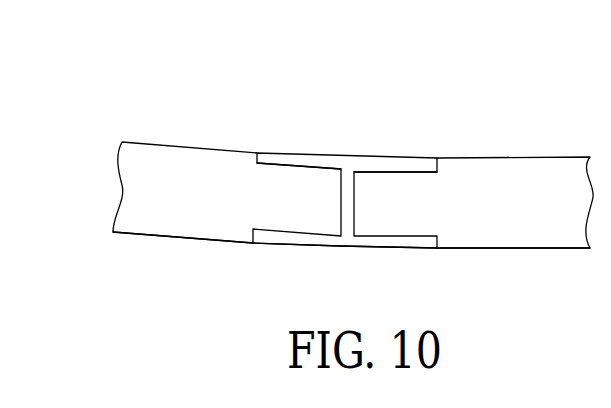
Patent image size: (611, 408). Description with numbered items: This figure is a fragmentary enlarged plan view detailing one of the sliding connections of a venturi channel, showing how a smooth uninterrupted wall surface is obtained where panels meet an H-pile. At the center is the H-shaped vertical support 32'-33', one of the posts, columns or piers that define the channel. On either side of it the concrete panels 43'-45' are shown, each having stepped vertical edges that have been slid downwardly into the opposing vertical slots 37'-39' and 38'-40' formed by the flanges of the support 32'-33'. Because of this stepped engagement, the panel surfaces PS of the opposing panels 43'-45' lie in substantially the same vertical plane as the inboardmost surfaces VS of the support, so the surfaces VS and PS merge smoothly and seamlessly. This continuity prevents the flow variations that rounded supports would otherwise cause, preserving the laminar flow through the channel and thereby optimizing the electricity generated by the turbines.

The vertical supports 32'-33' is at (345, 164).
The concrete panels 43'-45' is at (356, 161).
The vertical slots 37'-39' is at (253, 184).
The vertical slots 38'-40' is at (442, 196).
The panel surfaces PS is at (505, 292).
The inboardmost surfaces VS is at (300, 248).